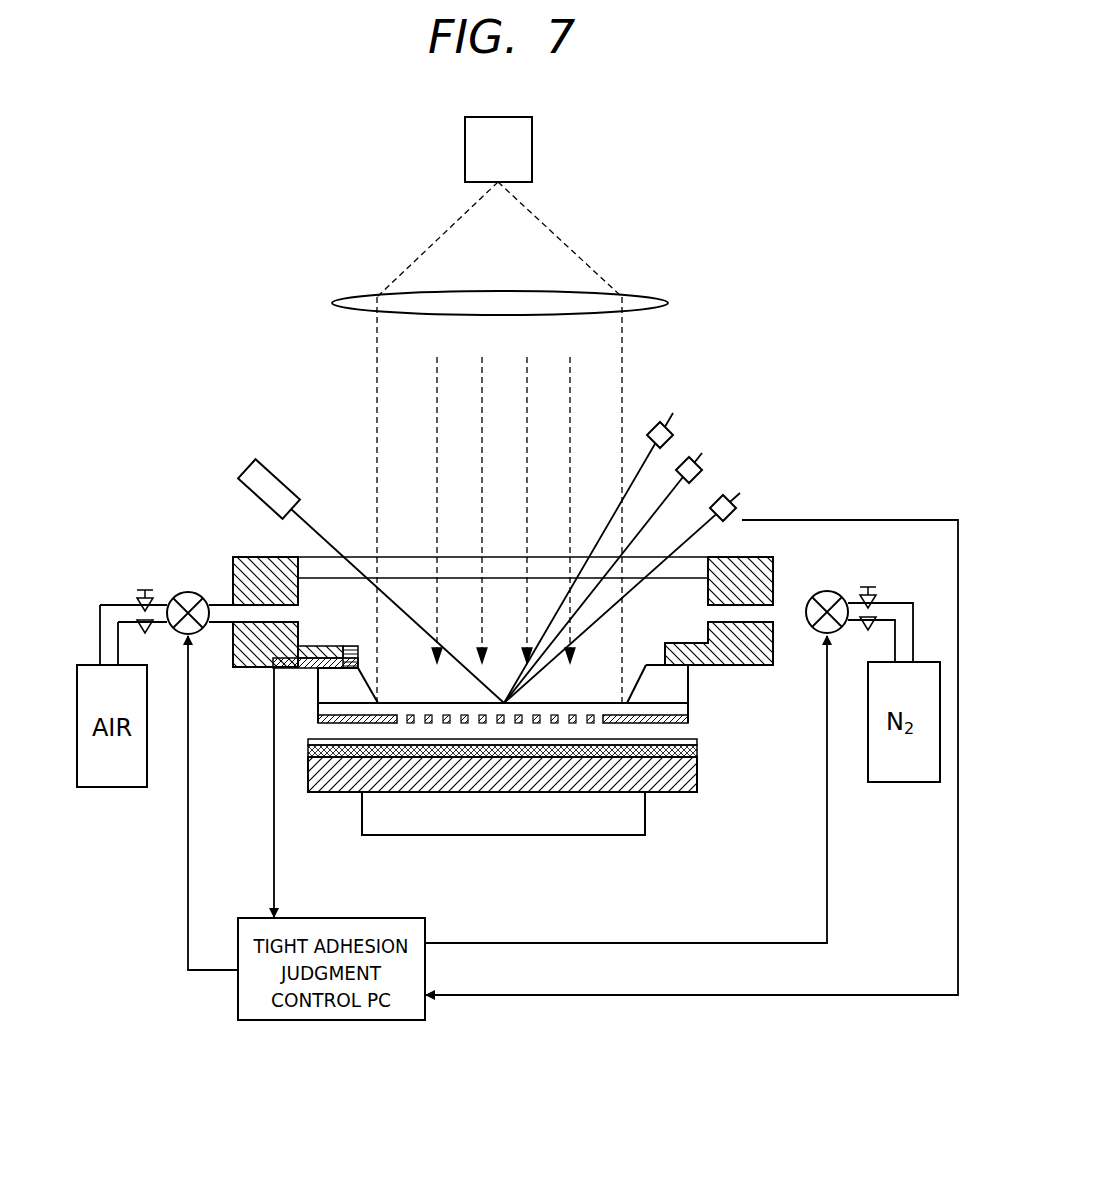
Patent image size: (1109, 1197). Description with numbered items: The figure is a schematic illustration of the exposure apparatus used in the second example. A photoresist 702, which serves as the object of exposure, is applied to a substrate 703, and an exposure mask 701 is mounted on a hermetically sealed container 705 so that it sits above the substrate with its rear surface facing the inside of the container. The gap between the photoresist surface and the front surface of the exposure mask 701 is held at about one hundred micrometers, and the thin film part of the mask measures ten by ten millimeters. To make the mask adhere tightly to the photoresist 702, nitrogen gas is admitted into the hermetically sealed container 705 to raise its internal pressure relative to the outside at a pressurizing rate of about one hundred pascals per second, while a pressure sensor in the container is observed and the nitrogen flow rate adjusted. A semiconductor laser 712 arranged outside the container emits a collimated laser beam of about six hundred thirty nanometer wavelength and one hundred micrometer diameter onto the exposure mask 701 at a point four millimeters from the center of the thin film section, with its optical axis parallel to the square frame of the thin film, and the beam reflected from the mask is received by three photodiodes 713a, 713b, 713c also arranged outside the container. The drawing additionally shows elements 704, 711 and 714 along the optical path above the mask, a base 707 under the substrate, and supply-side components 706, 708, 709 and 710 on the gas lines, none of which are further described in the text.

The exposure mask 701 is at (705, 688).
The photoresist 702 is at (697, 751).
The substrate 703 is at (697, 775).
The light source 704 is at (498, 149).
The hermetically sealed container 705 is at (765, 557).
The N2 valve 706 is at (832, 592).
The chuck base 707 is at (636, 818).
The air valve 708 is at (352, 667).
The N2 check valve 709 is at (876, 590).
The air check valve 710 is at (178, 637).
The lens 711 is at (648, 297).
The semiconductor laser 712 is at (258, 470).
The photodiode 713a is at (664, 422).
The photodiode 713b is at (693, 458).
The photodiode 713c is at (727, 496).
The transparent plate 714 is at (405, 560).